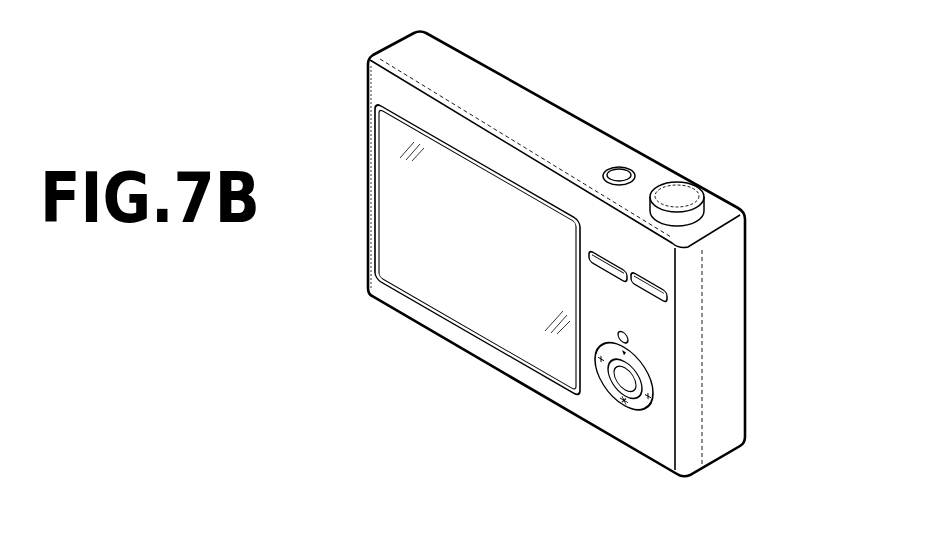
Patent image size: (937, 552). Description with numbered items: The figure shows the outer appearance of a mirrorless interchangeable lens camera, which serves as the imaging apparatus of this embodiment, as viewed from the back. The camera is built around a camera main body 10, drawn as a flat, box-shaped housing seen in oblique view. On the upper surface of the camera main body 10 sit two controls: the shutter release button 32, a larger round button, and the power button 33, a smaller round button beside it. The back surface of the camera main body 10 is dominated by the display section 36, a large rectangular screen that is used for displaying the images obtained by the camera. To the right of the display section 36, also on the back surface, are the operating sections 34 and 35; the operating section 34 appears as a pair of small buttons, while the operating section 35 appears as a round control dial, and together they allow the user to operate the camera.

The camera main body 10 is at (733, 360).
The shutter release button 32 is at (687, 196).
The power button 33 is at (620, 172).
The operating section 34 is at (667, 302).
The operating section 35 is at (637, 403).
The display section 36 is at (462, 315).